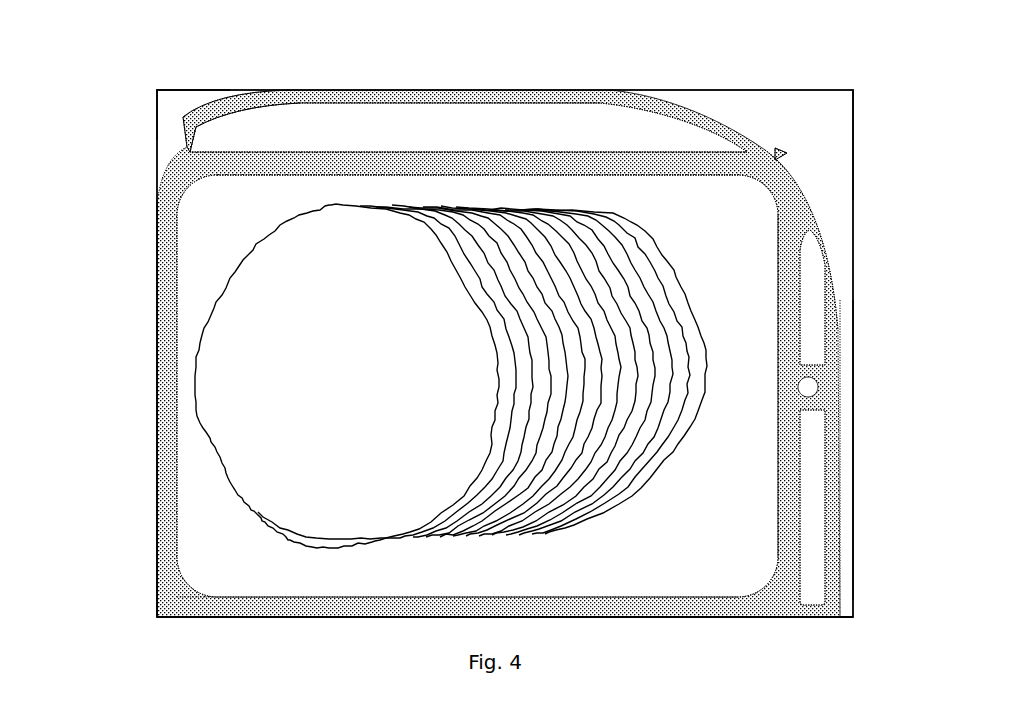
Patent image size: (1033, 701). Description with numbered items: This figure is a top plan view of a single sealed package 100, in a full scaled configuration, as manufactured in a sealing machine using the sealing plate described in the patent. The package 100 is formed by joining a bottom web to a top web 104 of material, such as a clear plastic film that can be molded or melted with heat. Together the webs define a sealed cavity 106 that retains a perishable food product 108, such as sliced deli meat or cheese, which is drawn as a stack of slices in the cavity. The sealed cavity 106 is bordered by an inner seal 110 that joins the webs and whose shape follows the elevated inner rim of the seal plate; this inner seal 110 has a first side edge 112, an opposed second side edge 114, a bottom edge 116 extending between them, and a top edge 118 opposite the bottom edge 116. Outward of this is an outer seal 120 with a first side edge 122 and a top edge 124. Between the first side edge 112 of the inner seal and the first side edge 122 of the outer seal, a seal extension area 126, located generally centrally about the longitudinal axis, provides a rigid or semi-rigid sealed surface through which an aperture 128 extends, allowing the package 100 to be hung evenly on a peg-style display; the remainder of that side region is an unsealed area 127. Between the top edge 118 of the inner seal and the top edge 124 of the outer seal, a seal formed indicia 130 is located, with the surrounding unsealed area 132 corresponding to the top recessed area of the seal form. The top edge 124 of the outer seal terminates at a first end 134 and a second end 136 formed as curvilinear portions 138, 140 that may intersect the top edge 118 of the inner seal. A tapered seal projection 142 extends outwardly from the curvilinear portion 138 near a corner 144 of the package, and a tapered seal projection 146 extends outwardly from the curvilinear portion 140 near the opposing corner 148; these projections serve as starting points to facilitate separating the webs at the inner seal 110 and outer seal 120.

The package 100 is at (635, 70).
The top web 104 is at (205, 102).
The sealed cavity 106 is at (211, 260).
The perishable food product 108 is at (636, 484).
The inner seal 110 is at (661, 645).
The first side edge of the inner seal 112 is at (786, 478).
The second side edge of the inner seal 114 is at (163, 508).
The bottom edge of the inner seal 116 is at (335, 610).
The top edge of the inner seal 118 is at (674, 178).
The outer seal 120 is at (874, 518).
The first side edge of the outer seal 122 is at (835, 468).
The top edge of the outer seal 124 is at (593, 97).
The seal extension area 126 is at (815, 404).
The unsealed area 127 is at (813, 293).
The aperture 128 is at (812, 385).
The seal formed indicia 130 is at (450, 90).
The unsealed area 132 is at (353, 127).
The first end of the top edge of the outer seal 134 is at (188, 152).
The second end of the top edge of the outer seal 136 is at (757, 150).
The curvilinear portion 138 is at (228, 105).
The curvilinear portion 140 is at (728, 130).
The tapered seal projection 142 is at (183, 127).
The corner 144 is at (155, 93).
The tapered seal projection 146 is at (783, 157).
The corner 148 is at (857, 97).